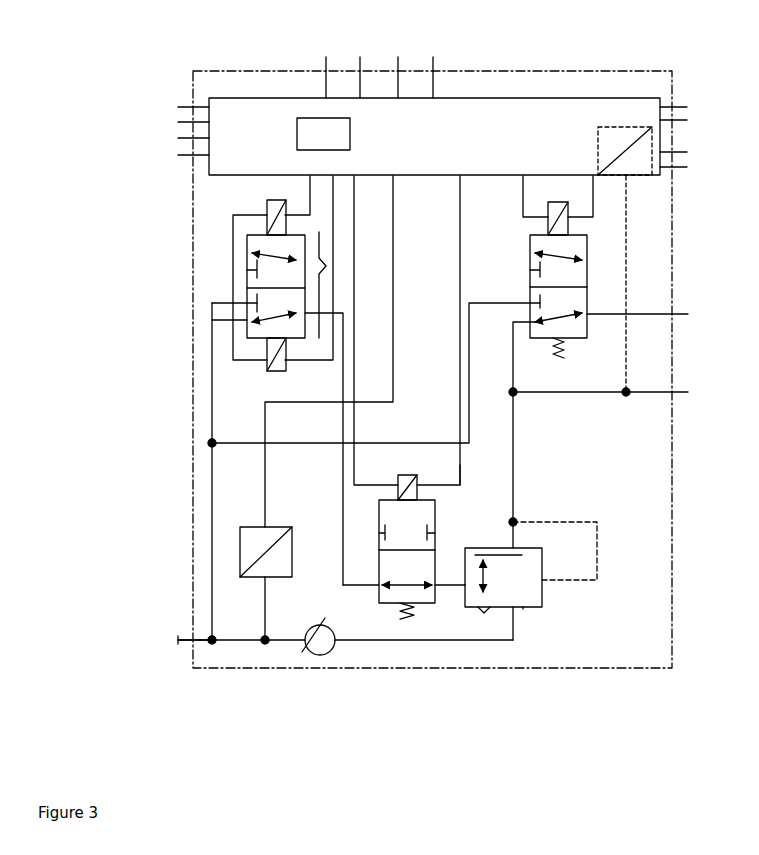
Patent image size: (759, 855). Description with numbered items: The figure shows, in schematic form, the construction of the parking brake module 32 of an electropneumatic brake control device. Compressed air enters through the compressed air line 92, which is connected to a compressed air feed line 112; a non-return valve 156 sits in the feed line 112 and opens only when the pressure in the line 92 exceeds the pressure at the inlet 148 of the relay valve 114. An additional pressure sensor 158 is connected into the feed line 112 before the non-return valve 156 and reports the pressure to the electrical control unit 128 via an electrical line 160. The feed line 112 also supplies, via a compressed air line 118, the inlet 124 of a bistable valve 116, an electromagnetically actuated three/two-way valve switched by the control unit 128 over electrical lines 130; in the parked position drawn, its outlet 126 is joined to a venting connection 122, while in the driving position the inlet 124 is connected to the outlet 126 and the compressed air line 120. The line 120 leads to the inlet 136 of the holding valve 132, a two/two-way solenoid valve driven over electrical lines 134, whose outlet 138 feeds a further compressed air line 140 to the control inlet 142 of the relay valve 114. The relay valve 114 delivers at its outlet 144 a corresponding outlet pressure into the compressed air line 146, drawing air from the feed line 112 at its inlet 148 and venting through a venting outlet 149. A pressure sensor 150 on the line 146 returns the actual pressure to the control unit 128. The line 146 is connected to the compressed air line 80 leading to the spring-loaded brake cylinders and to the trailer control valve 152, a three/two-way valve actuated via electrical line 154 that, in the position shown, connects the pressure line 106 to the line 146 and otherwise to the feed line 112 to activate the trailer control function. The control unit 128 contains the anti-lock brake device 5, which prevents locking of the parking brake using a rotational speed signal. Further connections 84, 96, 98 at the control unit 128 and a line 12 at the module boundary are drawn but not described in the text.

The parking brake module 32 is at (577, 71).
The electrical control unit 128 is at (255, 97).
The anti-lock brake device 5 is at (350, 134).
The electrical connections 98 is at (437, 57).
The electrical connections 84 is at (178, 100).
The electrical connections 96 is at (687, 100).
The pressure sensor 150 is at (598, 147).
The bistable valve 116 is at (264, 234).
The electrical lines 130 is at (333, 205).
The inlet 124 is at (245, 303).
The outlet 126 is at (305, 313).
The venting connection 122 is at (247, 320).
The compressed air line 118 is at (212, 390).
The electrical line 160 is at (393, 400).
The compressed air feed line 112 is at (448, 443).
The compressed air line 120 is at (343, 485).
The trailer control valve 152 is at (537, 235).
The electrical line 154 is at (590, 188).
The pressure line 106 is at (688, 314).
The compressed air line 146 is at (513, 472).
The compressed air line 80 is at (688, 393).
The holding valve 132 is at (418, 497).
The electrical lines 134 is at (440, 485).
The inlet 136 is at (376, 592).
The outlet 138 is at (437, 590).
The compressed air line 140 is at (445, 583).
The outlet 144 is at (515, 543).
The relay valve 114 is at (537, 608).
The control inlet 142 is at (463, 588).
The inlet 148 is at (523, 608).
The venting outlet 149 is at (490, 608).
The non-return valve 156 is at (330, 650).
The pressure sensor 158 is at (277, 577).
The supply line 12 is at (240, 661).
The compressed air line 92 is at (185, 647).